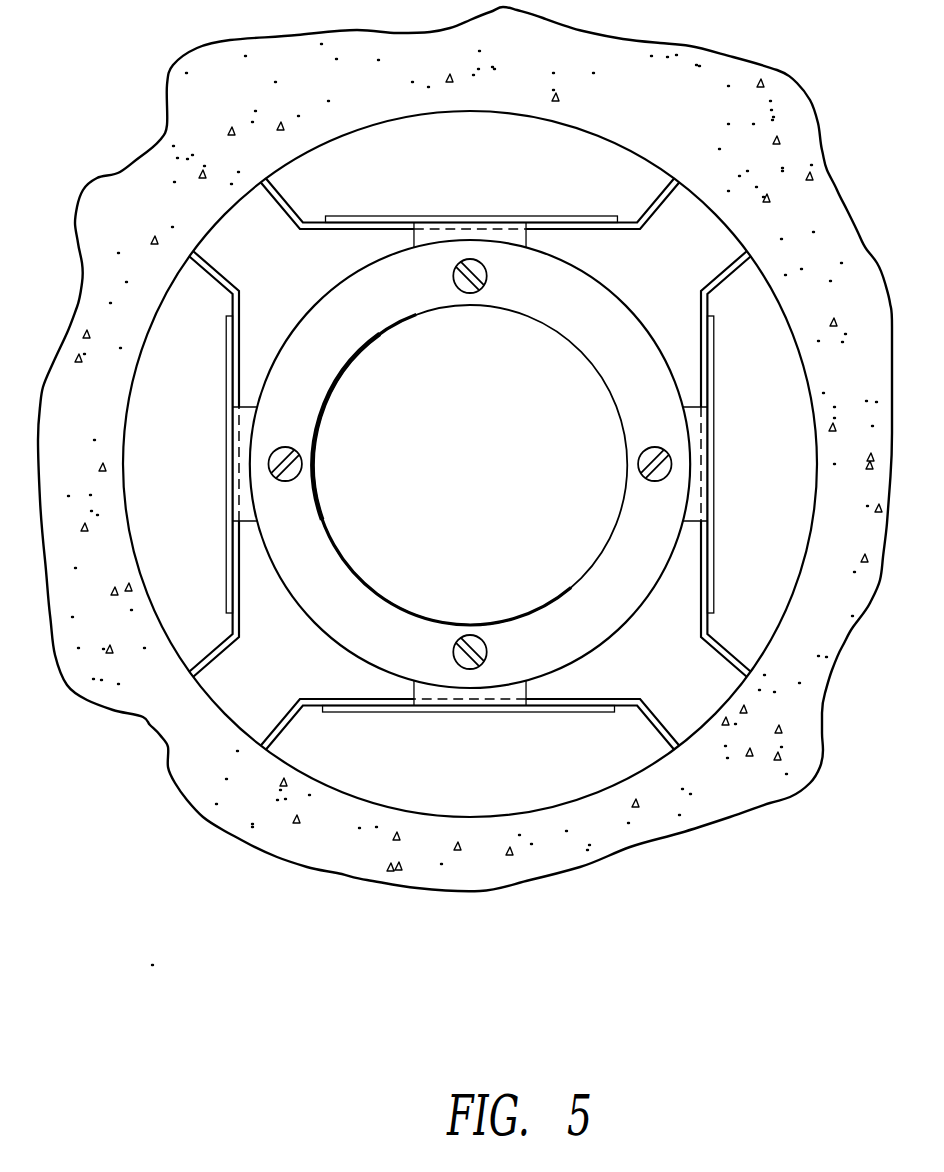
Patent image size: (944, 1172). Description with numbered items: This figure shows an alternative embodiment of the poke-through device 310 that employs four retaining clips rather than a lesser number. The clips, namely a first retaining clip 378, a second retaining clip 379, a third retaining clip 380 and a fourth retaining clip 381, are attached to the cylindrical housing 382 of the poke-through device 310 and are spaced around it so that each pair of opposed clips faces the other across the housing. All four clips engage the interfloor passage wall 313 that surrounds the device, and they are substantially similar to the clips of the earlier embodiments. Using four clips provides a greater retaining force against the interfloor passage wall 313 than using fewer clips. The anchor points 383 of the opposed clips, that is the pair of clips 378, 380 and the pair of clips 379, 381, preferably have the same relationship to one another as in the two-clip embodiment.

The poke-through device 310 is at (528, 338).
The interfloor passage wall 313 is at (727, 230).
The retaining clip 378 is at (561, 231).
The retaining clip 379 is at (706, 612).
The retaining clip 380 is at (325, 703).
The retaining clip 381 is at (236, 327).
The cylindrical housing 382 is at (623, 333).
The anchor points 383 is at (216, 270).